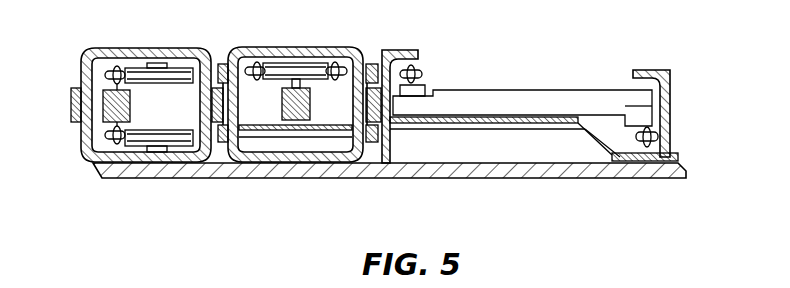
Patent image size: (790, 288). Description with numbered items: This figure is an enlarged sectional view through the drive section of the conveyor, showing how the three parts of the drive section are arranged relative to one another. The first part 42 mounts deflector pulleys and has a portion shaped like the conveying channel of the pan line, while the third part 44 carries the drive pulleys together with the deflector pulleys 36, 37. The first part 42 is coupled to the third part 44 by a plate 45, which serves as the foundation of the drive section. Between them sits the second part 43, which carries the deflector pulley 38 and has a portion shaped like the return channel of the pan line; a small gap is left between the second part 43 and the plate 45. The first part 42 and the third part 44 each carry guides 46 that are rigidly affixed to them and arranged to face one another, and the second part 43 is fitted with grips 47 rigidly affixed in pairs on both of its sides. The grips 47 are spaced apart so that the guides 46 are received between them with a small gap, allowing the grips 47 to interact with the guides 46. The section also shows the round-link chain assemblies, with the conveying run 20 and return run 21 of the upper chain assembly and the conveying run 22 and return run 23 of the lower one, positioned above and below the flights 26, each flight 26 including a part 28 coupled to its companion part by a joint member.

The conveying run 20 is at (418, 63).
The return run 21 is at (118, 67).
The conveying run 22 is at (653, 145).
The return run 23 is at (118, 147).
The flight 26 is at (112, 118).
The part 28 is at (487, 100).
The deflector pulley 36 is at (155, 70).
The deflector pulley 37 is at (164, 142).
The deflector pulley 38 is at (286, 62).
The first part 42 is at (449, 124).
The second part 43 is at (277, 157).
The third part 44 is at (88, 80).
The plate 45 is at (568, 170).
The guide 46 is at (75, 112).
The grip 47 is at (225, 62).